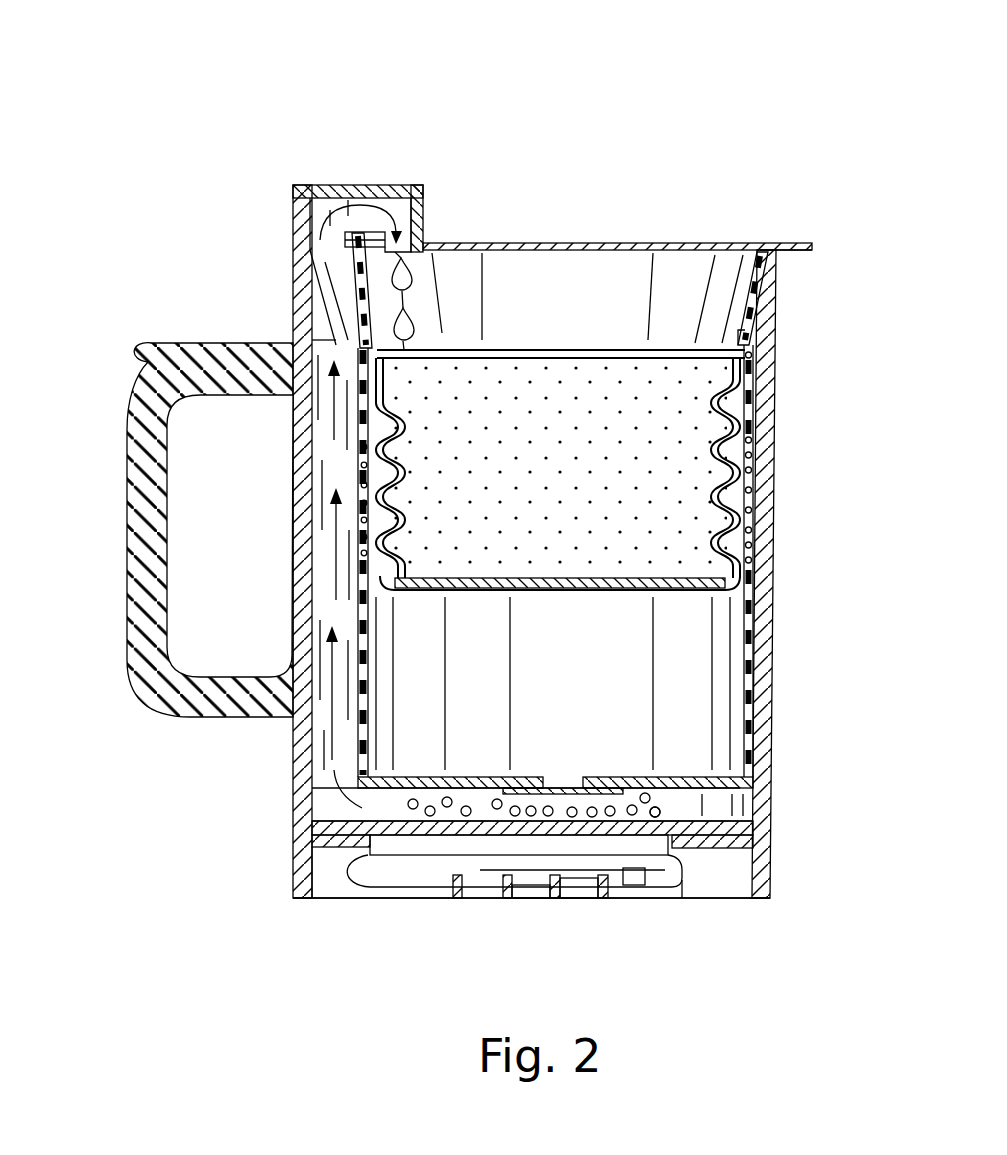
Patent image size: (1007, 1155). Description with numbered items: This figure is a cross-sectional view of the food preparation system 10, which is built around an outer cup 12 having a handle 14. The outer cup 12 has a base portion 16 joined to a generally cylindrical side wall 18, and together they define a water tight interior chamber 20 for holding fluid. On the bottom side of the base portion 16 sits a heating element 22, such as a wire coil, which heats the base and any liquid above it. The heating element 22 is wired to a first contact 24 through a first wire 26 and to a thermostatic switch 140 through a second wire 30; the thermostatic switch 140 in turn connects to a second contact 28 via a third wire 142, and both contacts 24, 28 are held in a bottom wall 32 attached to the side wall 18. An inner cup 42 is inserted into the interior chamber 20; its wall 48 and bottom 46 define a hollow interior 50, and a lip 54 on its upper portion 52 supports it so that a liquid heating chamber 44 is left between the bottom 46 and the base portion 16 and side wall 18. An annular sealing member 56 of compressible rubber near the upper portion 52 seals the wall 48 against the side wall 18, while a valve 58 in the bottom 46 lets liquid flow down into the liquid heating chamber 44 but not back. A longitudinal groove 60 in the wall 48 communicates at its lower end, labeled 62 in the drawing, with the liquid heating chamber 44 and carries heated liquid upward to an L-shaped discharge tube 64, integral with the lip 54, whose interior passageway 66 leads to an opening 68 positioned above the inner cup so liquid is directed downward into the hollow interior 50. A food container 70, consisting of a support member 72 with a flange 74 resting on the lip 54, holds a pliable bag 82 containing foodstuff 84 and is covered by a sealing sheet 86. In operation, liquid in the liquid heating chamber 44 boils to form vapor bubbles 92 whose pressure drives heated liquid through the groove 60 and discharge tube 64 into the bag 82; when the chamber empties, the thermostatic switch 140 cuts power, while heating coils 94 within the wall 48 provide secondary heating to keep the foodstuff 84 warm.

The food preparation system 10 is at (702, 78).
The outer cup 12 is at (790, 642).
The handle 14 is at (127, 560).
The base portion 16 is at (722, 848).
The side wall 18 is at (772, 717).
The interior chamber 20 is at (760, 803).
The heating element 22 is at (387, 848).
The first contact 24 is at (453, 898).
The first wire 26 is at (388, 898).
The second contact 28 is at (550, 898).
The second wire 30 is at (672, 868).
The bottom wall 32 is at (322, 900).
The inner cup 42 is at (766, 755).
The liquid heating chamber 44 is at (390, 812).
The bottom 46 is at (450, 776).
The wall 48 is at (366, 671).
The hollow interior 50 is at (712, 678).
The upper portion 52 is at (775, 390).
The lip 54 is at (776, 330).
The annular sealing member 56 is at (335, 346).
The valve 58 is at (555, 782).
The groove 60 is at (338, 484).
The duct outlet 62 is at (397, 803).
The discharge tube 64 is at (338, 175).
The interior passageway 66 is at (306, 218).
The opening 68 is at (414, 260).
The food container 70 is at (670, 225).
The support member 72 is at (776, 308).
The flange 74 is at (776, 252).
The bag 82 is at (700, 513).
The foodstuff 84 is at (735, 502).
The sealing sheet 86 is at (553, 242).
The vapor bubbles 92 is at (660, 814).
The heating coils 94 is at (376, 440).
The thermostatic switch 140 is at (636, 886).
The third wire 142 is at (613, 898).